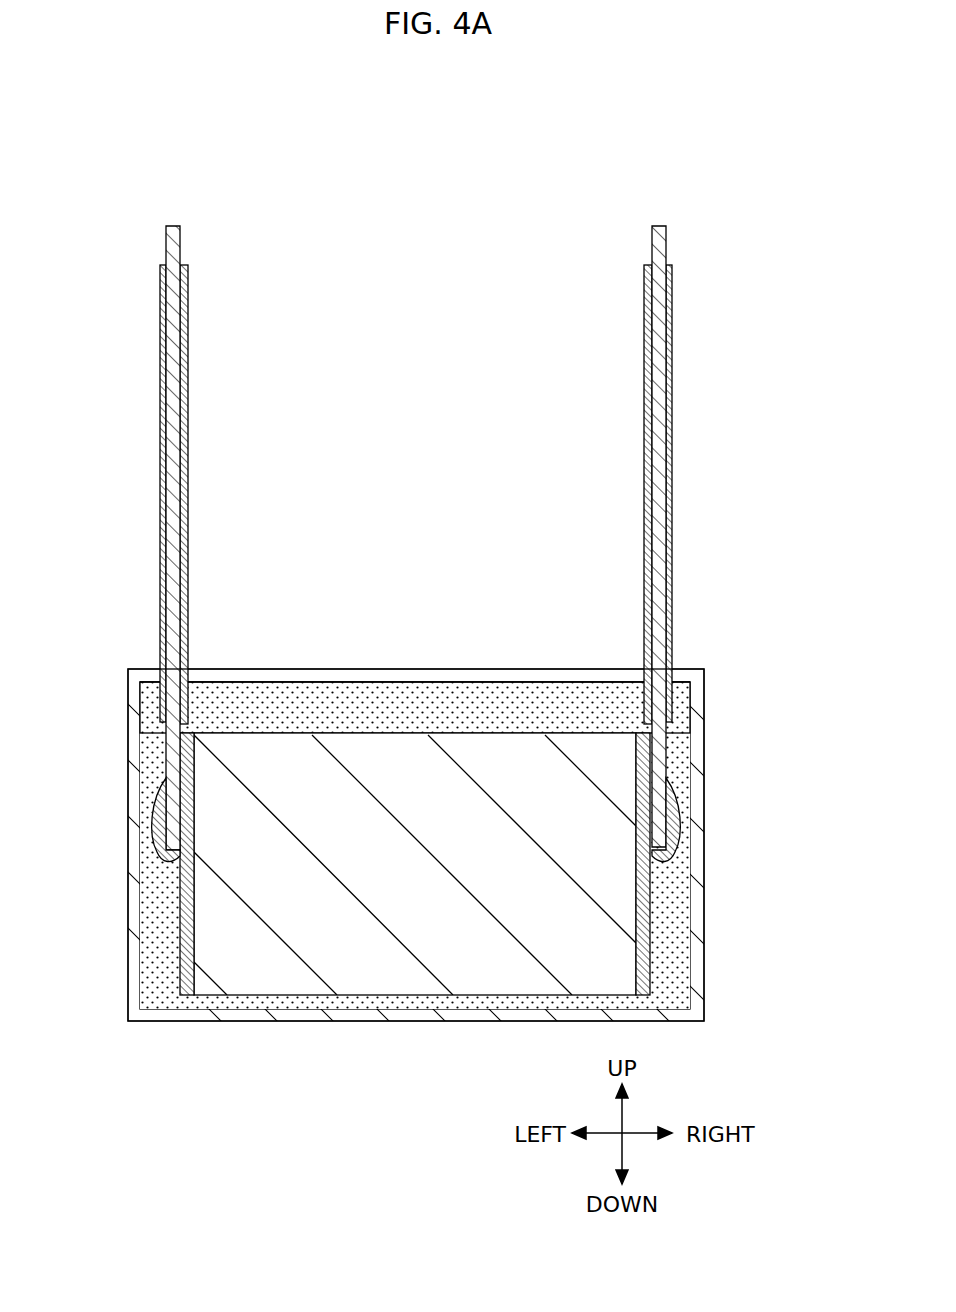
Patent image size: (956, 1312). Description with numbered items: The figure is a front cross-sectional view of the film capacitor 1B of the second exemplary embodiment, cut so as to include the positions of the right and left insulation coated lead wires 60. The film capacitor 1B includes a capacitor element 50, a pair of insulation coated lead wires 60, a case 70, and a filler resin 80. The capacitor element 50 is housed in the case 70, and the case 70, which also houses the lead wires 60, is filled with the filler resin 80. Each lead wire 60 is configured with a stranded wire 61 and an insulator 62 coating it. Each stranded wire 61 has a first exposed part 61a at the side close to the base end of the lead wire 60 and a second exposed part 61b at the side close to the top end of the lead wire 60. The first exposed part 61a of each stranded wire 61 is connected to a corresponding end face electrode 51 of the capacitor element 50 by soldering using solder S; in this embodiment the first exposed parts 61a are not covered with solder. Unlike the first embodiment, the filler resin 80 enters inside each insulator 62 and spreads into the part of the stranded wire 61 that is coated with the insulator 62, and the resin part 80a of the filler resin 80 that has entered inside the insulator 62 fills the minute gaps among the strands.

The film capacitor 1B is at (696, 637).
The capacitor element 50 is at (388, 730).
The end face electrode 51 is at (180, 928).
The insulation coated lead wire 60 is at (437, 517).
The stranded wire 61 is at (437, 517).
The first exposed part 61a is at (165, 767).
The second exposed part 61b is at (182, 250).
The insulator 62 is at (187, 362).
The case 70 is at (705, 847).
The filler resin 80 is at (445, 698).
The resin part 80a is at (190, 684).
The solder S is at (167, 842).